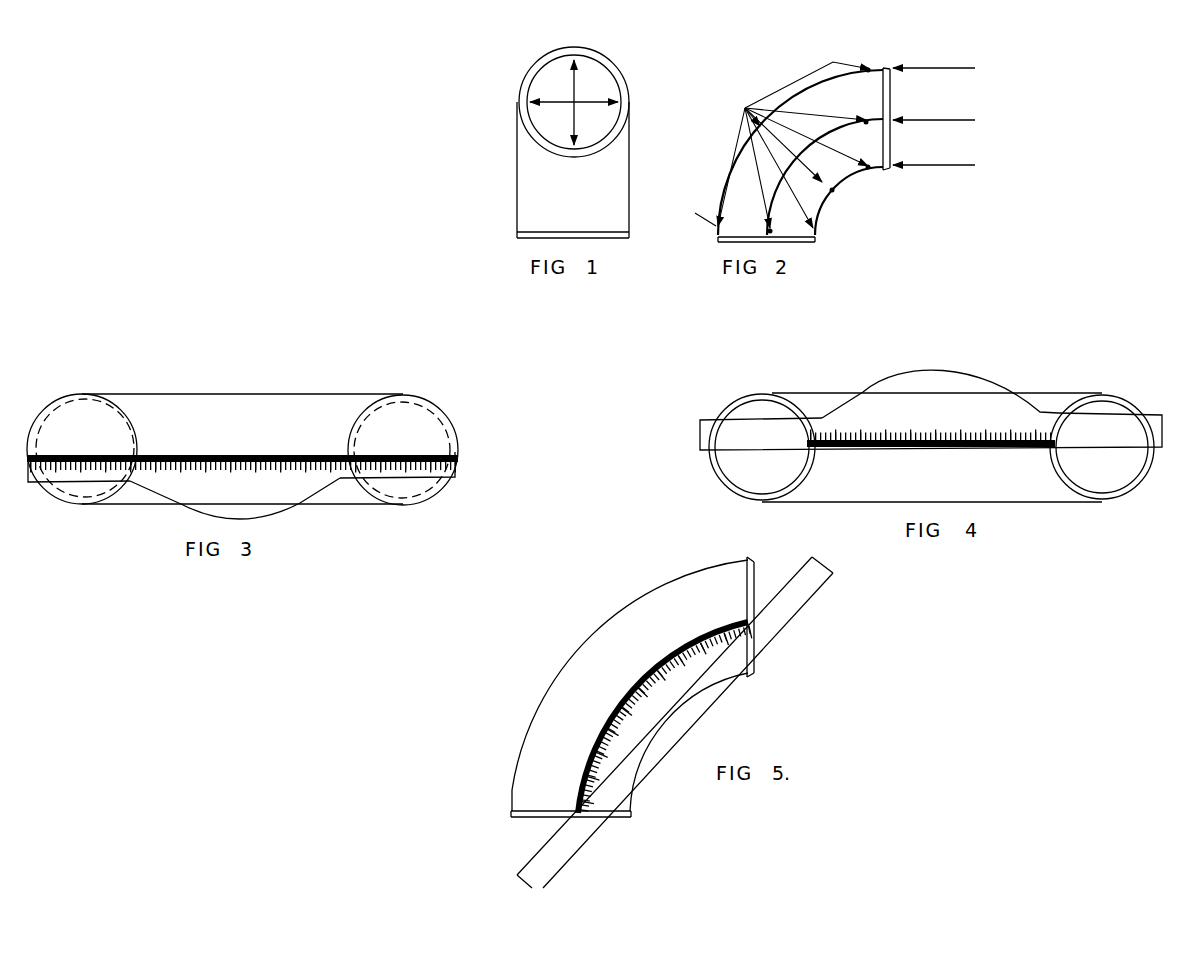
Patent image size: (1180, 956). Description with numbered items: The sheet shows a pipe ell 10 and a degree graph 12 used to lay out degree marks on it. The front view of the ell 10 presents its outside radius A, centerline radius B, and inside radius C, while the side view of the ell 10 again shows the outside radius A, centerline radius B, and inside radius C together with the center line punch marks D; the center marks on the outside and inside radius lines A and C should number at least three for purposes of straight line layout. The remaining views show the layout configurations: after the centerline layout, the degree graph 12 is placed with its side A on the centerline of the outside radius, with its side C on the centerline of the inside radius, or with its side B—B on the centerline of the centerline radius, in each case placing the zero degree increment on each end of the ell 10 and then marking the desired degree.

In FIG. 1, the ell 10 is at (507, 193).
In FIG. 2, the ell 10 is at (859, 197).
In FIG. 3, the ell 10 is at (365, 394).
In FIG. 4, the ell 10 is at (813, 392).
In FIG. 3, the degree graph 12 is at (458, 445).
In FIG. 4, the degree graph 12 is at (836, 447).
In FIG. 5, the degree graph 12 is at (572, 768).
In FIG. 2, the outside radius A is at (942, 70).
In FIG. 3, the outside radius A is at (235, 497).
In FIG. 1, the centerline radius B is at (571, 101).
In FIG. 2, the centerline radius B is at (942, 122).
In FIG. 5, the centerline radius B is at (627, 722).
In FIG. 1, the inside radius C is at (573, 122).
In FIG. 2, the inside radius C is at (942, 167).
In FIG. 4, the inside radius C is at (940, 398).
In FIG. 2, the center line punch marks D is at (783, 148).